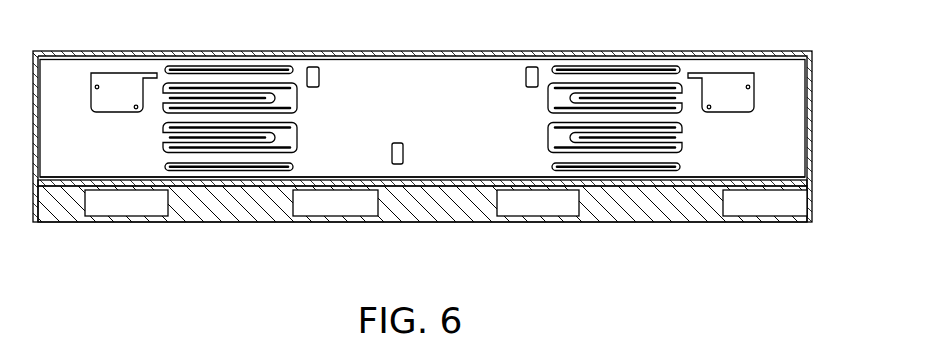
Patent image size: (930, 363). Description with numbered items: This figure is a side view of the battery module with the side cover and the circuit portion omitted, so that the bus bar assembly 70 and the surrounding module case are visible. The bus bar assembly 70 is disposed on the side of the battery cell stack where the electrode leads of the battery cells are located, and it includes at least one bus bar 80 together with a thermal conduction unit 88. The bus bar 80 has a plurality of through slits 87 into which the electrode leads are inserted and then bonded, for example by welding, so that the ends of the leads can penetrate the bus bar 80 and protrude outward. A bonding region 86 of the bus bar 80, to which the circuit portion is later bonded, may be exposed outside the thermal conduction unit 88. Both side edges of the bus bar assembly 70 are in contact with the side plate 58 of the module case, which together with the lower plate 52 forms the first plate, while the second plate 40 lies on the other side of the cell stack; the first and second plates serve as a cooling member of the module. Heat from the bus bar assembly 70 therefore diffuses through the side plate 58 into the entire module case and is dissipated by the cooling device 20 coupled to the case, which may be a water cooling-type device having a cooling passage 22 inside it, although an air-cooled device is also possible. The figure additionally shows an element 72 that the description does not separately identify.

The cooling device 20 is at (404, 224).
The cooling passage 22 is at (539, 203).
The second plate 40 is at (355, 51).
The lower plate 52 is at (244, 182).
The side plate 58 is at (40, 84).
The bus bar assembly 70 is at (450, 182).
The bracket 72 is at (720, 73).
The bus bar 80 is at (230, 90).
The bonding region 86 is at (313, 68).
The through slits 87 is at (269, 68).
The thermal conduction unit 88 is at (782, 75).